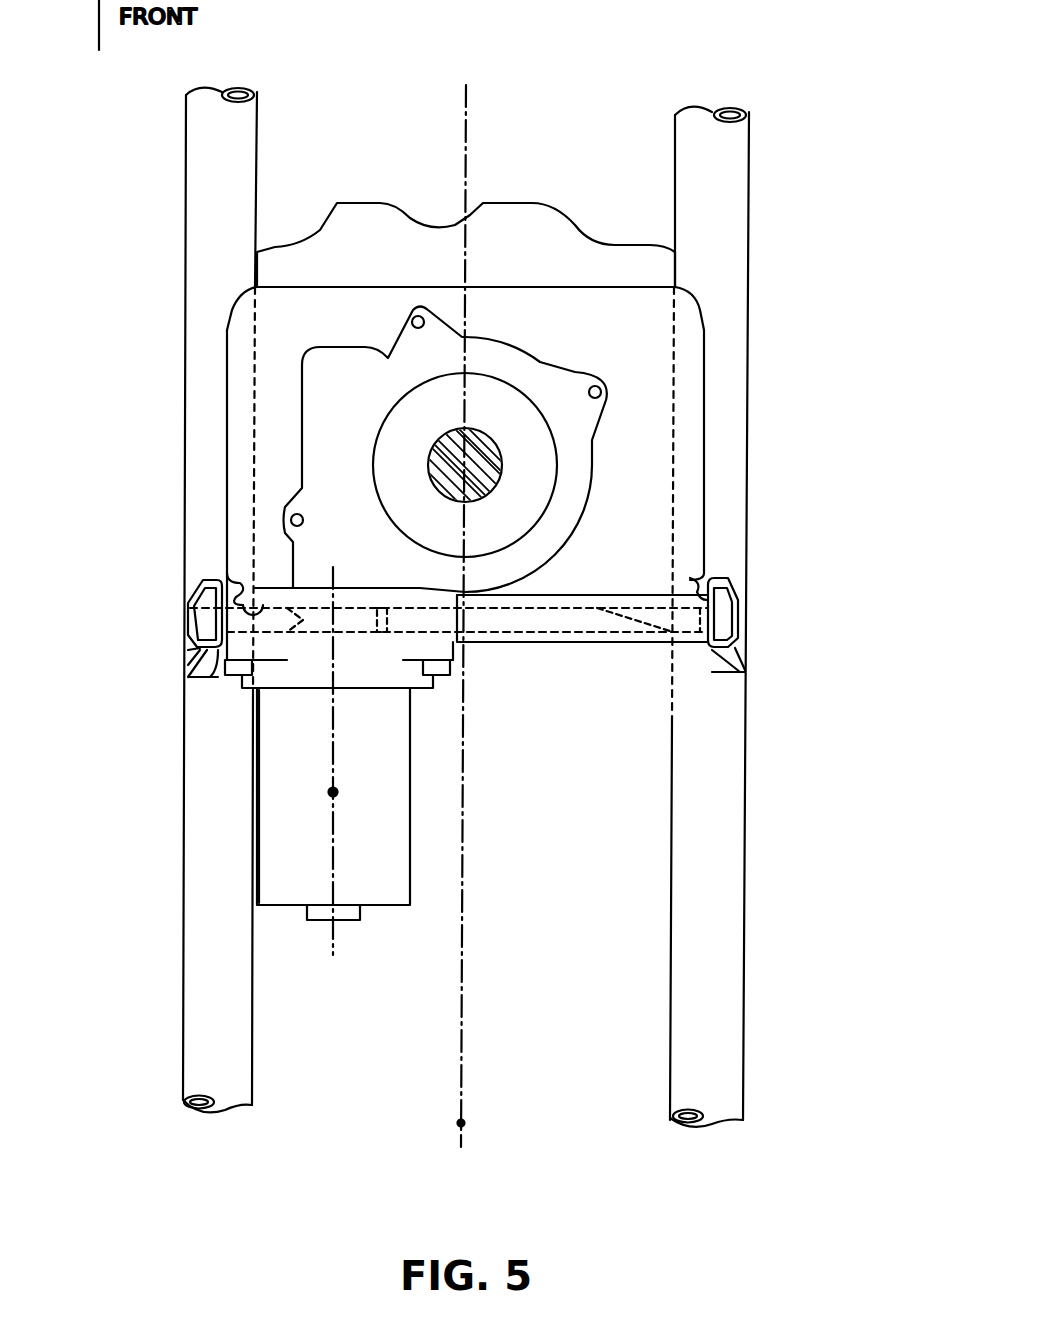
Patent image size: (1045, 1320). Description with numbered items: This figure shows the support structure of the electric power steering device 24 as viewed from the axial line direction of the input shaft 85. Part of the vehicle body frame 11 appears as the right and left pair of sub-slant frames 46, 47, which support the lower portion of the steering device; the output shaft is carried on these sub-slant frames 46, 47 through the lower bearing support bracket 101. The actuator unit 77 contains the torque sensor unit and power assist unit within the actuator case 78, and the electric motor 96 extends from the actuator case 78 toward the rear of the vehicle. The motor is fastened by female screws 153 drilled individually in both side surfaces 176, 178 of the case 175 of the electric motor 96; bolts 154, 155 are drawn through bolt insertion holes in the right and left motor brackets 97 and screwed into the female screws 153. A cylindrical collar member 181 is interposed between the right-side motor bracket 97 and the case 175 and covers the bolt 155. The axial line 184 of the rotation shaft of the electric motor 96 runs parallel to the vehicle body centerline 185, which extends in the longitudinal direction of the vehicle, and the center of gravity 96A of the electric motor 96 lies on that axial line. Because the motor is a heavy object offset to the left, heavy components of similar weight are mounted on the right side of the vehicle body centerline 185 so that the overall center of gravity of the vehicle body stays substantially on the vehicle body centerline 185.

The vehicle body frame 11 is at (470, 602).
The electric power steering device 24 is at (466, 565).
The sub-slant frame 46 is at (193, 1037).
The sub-slant frame 47 is at (707, 1050).
The actuator unit 77 is at (302, 470).
The actuator case 78 is at (527, 365).
The input shaft 85 is at (502, 462).
The electric motor 96 is at (244, 820).
The center of gravity 96A is at (333, 792).
The motor bracket 97 is at (208, 578).
The lower bearing support bracket 101 is at (643, 377).
The female screw 153 is at (230, 577).
The bolt 154 is at (203, 623).
The bolt 155 is at (735, 623).
The case 175 is at (280, 782).
The side surface 176 is at (190, 678).
The side surface 178 is at (462, 606).
The cylindrical collar member 181 is at (637, 644).
The axial line 184 is at (315, 987).
The vehicle body centerline 185 is at (461, 1123).